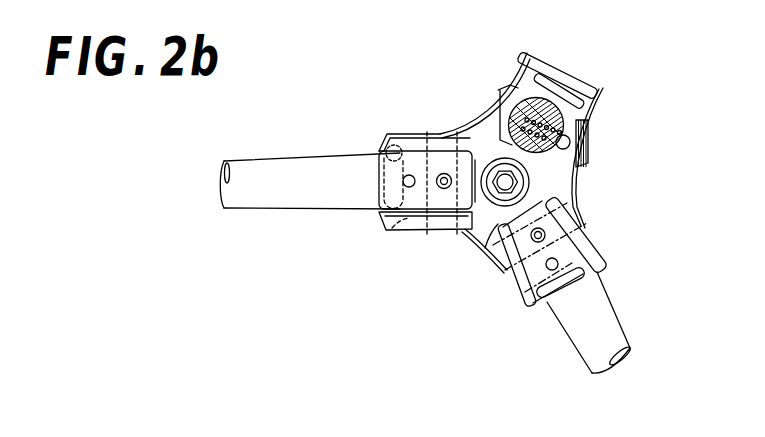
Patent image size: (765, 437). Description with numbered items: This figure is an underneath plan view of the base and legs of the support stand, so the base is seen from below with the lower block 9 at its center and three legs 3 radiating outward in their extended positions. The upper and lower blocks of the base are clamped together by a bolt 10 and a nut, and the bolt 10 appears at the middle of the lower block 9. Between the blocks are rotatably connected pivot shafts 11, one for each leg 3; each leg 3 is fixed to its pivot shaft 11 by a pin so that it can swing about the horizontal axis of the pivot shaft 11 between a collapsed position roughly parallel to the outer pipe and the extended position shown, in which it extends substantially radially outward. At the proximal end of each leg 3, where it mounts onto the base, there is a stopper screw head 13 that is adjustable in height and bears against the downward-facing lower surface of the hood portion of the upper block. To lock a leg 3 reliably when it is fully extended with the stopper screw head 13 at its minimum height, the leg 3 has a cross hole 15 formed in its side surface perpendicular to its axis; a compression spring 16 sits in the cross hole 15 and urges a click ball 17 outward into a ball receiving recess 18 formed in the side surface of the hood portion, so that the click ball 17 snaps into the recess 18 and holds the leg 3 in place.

The leg 3 is at (315, 167).
The lower block 9 is at (480, 140).
The bolt 10 is at (472, 240).
The pivot shaft 11 is at (404, 230).
The stopper screw head 13 is at (553, 82).
The cross hole 15 is at (512, 74).
The compression spring 16 is at (556, 181).
The click ball 17 is at (567, 143).
The ball receiving recess 18 is at (397, 132).